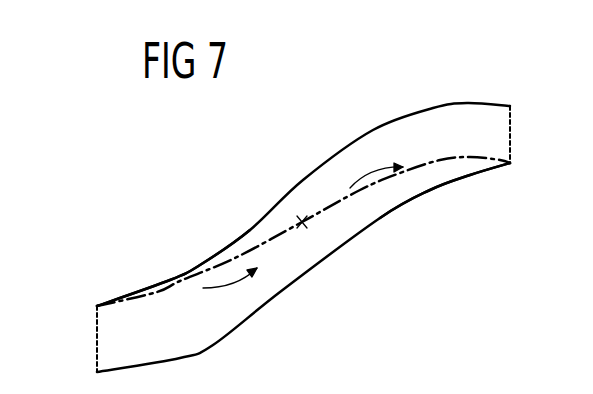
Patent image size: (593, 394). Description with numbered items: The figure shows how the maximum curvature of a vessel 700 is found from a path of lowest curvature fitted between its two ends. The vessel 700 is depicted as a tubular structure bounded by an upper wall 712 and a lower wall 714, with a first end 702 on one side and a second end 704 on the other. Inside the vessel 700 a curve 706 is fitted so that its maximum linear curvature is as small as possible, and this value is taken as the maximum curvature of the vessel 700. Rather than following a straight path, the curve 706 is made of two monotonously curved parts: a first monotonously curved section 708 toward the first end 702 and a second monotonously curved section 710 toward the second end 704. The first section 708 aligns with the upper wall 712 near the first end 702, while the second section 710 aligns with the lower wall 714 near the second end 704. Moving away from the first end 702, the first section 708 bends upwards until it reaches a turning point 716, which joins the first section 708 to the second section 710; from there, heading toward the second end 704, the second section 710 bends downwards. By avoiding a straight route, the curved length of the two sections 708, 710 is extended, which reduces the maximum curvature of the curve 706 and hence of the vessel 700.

The vessel 700 is at (252, 142).
The first end 702 is at (97, 337).
The second end 704 is at (512, 133).
The curve 706 is at (160, 287).
The first monotonously curved section 708 is at (233, 262).
The second monotonously curved section 710 is at (428, 170).
The upper wall 712 is at (400, 101).
The lower wall 714 is at (213, 345).
The turning point 716 is at (300, 228).